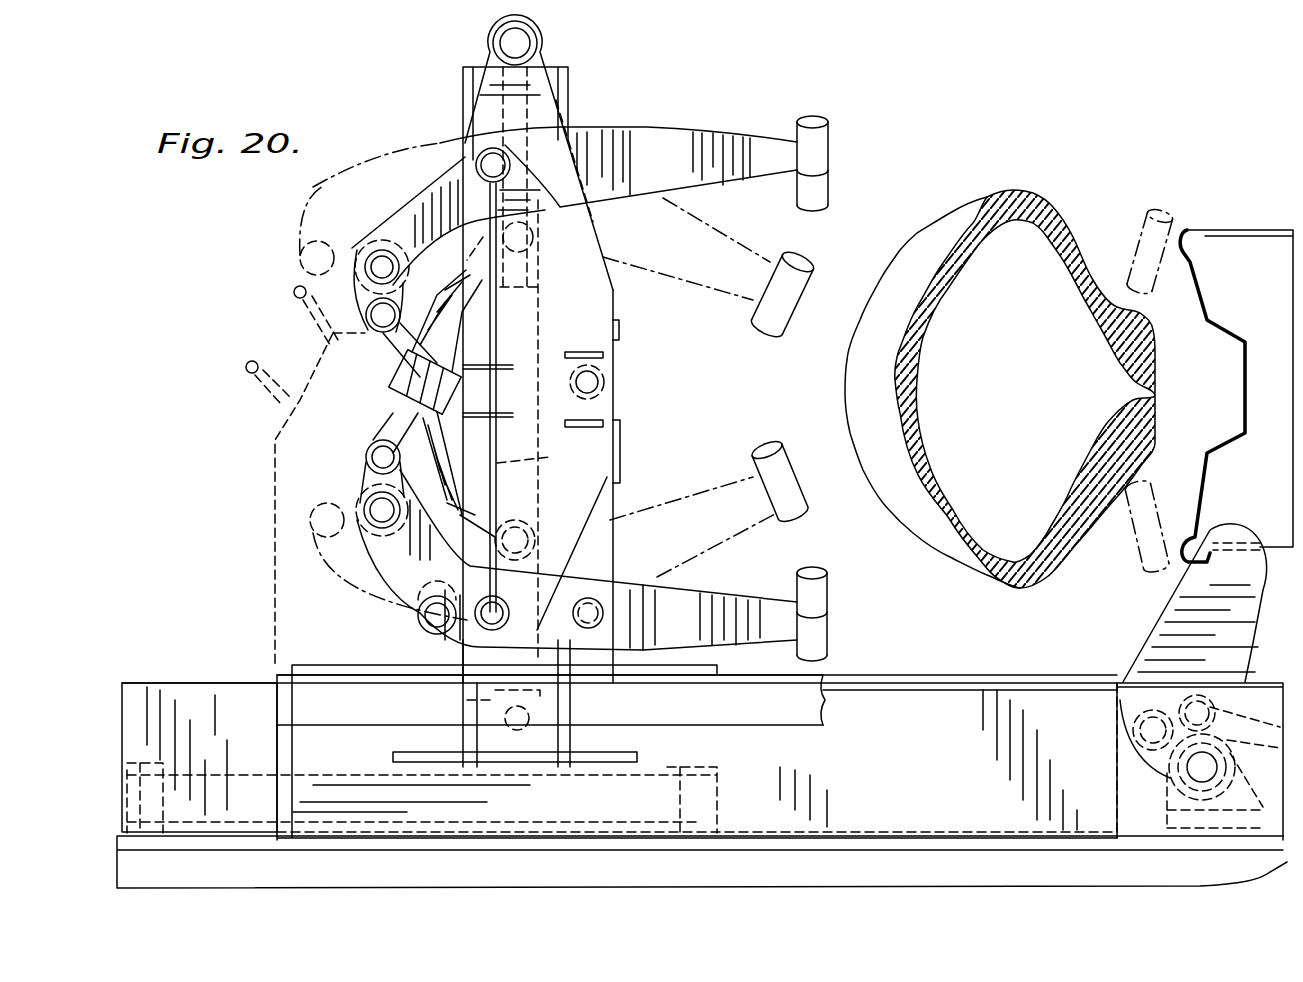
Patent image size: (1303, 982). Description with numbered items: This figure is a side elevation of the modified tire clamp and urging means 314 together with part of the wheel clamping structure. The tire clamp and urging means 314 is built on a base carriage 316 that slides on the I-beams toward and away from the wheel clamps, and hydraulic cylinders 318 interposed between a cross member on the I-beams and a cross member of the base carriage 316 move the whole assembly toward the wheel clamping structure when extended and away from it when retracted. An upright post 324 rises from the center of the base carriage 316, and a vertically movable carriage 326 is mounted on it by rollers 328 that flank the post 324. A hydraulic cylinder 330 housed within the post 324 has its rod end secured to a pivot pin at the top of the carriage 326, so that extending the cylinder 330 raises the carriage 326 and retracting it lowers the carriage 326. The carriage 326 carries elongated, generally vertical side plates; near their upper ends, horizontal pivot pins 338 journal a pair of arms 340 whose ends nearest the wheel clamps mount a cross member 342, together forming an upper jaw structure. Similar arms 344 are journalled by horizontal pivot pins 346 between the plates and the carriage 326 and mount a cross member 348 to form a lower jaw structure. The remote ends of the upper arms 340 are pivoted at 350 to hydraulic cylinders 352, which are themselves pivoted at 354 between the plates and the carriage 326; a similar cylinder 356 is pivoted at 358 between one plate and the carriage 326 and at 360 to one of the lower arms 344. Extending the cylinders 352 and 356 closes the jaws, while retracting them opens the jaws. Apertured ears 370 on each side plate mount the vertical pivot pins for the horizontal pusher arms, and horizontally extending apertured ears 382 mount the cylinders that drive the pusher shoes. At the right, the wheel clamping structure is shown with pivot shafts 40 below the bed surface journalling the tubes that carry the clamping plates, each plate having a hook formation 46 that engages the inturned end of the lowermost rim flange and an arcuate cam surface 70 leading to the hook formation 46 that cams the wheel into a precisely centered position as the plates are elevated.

The tire clamp and urging means 314 is at (637, 93).
The base carriage 316 is at (700, 747).
The hydraulic cylinders 318 is at (217, 777).
The upright post 324 is at (553, 67).
The vertically movable carriage 326 is at (590, 235).
The rollers 328 is at (493, 43).
The hydraulic cylinder 330 is at (467, 698).
The horizontal pivot pins 338 is at (480, 155).
The arms 340 is at (687, 147).
The cross member 342 is at (820, 145).
The arms 344 is at (723, 600).
The horizontal pivot pins 346 is at (457, 633).
The cross member 348 is at (820, 594).
The pivot 350 is at (382, 322).
The hydraulic cylinders 352 is at (613, 461).
The pivot 354 is at (572, 553).
The cylinder 356 is at (522, 300).
The pivot 358 is at (530, 256).
The pivot 360 is at (378, 452).
The apertured ears 370 is at (613, 417).
The apertured ears 382 is at (559, 383).
The pivot shafts 40 is at (1197, 767).
The hook formation 46 is at (1207, 533).
The arcuate cam surface 70 is at (1175, 588).